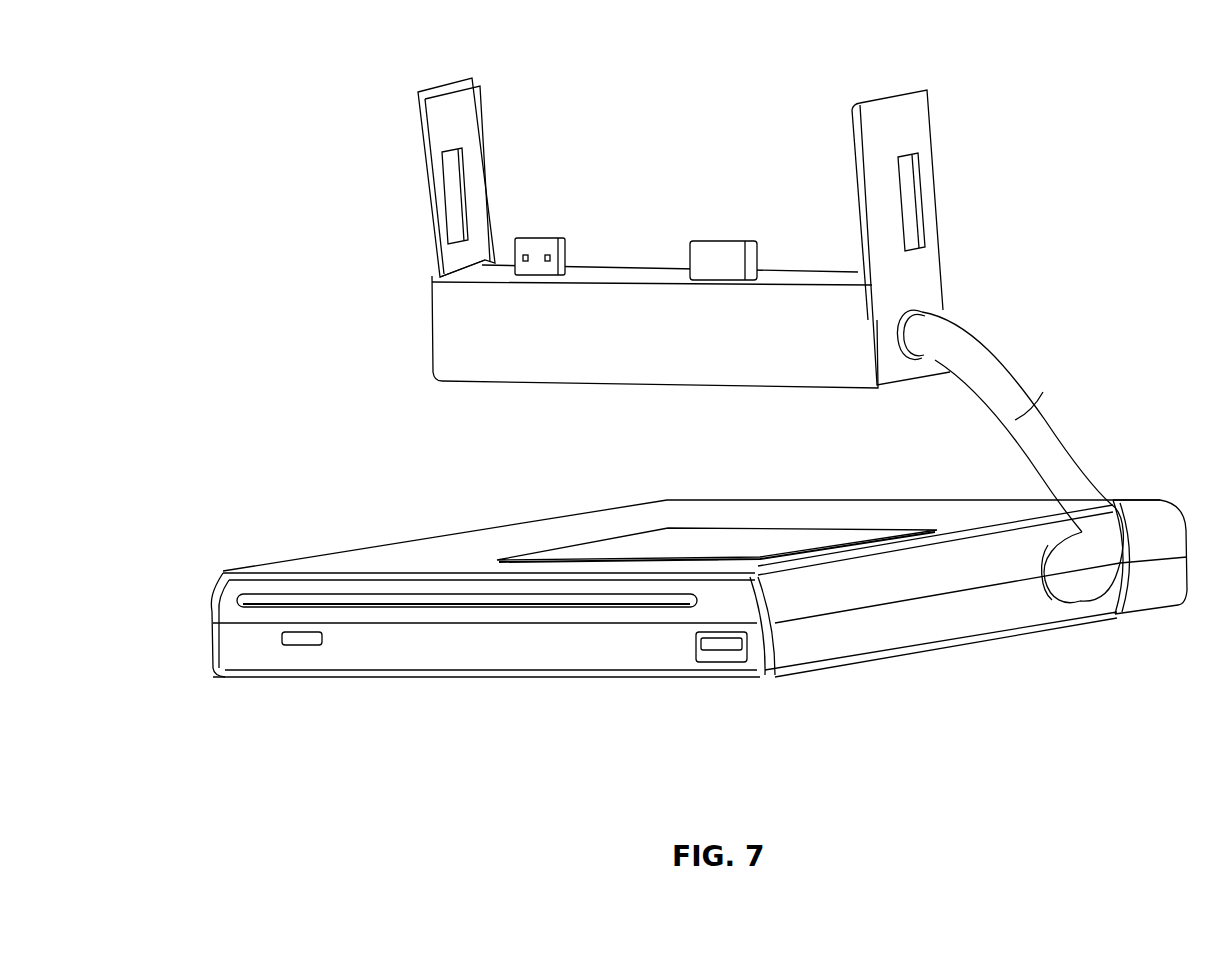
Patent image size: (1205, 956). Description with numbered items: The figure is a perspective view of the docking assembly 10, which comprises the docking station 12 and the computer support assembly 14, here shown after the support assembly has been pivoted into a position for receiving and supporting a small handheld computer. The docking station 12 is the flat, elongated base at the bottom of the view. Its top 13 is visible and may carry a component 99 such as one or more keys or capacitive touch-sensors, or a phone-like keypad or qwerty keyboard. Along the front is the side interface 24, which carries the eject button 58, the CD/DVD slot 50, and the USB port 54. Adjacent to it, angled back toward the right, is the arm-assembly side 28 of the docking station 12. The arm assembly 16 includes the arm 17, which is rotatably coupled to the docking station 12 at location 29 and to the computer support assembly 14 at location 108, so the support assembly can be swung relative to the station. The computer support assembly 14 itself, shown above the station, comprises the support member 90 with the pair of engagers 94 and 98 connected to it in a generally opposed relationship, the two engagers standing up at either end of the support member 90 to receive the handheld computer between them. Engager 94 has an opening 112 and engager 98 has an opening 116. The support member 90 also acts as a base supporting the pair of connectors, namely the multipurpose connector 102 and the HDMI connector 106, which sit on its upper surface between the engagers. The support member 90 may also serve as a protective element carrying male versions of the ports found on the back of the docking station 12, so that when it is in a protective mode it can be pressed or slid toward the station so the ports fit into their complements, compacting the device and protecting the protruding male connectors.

The docking assembly 10 is at (293, 72).
The docking station 12 is at (540, 516).
The top 13 is at (657, 521).
The computer support assembly 14 is at (955, 242).
The arm assembly 16 is at (1077, 410).
The arm 17 is at (1022, 378).
The side interface 24 is at (533, 682).
The arm-assembly side 28 is at (853, 678).
The location 29 is at (1065, 595).
The CD/DVD slot 50 is at (445, 605).
The USB port 54 is at (700, 645).
The eject button 58 is at (285, 645).
The support member 90 is at (846, 388).
The engager 94 is at (918, 118).
The engager 98 is at (462, 130).
The component 99 is at (718, 557).
The multipurpose connector 102 is at (722, 243).
The HDMI connector 106 is at (540, 240).
The location 108 is at (940, 300).
The opening 112 is at (915, 207).
The opening 116 is at (452, 185).